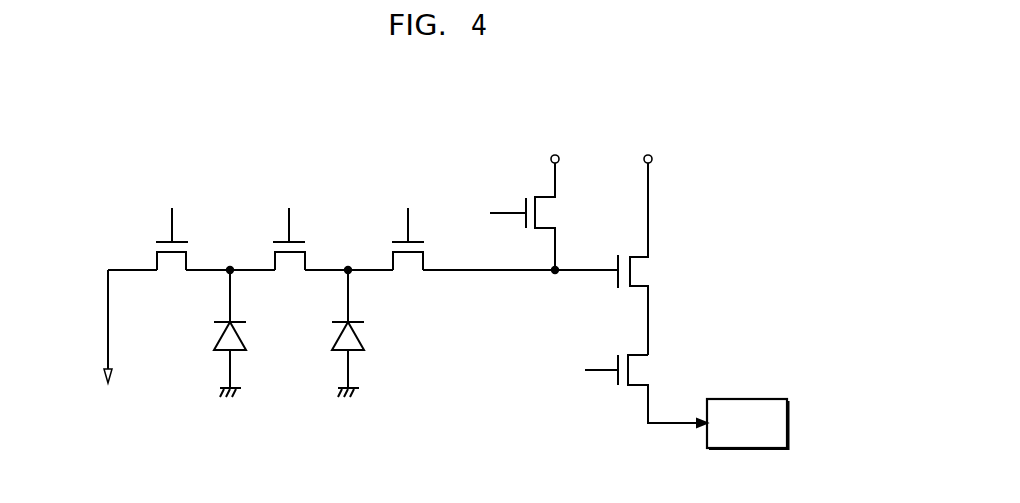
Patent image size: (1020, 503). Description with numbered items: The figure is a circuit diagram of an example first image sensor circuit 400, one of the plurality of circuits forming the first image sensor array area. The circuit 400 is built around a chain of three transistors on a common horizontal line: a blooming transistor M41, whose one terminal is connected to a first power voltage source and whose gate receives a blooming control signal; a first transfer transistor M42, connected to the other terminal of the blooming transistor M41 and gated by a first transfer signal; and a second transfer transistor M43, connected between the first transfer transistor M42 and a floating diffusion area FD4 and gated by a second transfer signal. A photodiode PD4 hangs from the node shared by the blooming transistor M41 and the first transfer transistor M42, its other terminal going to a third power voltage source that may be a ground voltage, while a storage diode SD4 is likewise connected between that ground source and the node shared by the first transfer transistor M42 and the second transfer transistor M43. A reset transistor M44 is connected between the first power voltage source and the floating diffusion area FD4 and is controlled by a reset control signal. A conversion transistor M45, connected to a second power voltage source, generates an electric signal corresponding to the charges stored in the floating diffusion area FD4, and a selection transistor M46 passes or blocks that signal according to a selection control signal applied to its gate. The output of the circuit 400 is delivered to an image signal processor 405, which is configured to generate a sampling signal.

The first image sensor circuit 400 is at (452, 275).
The image signal processor (ISP) 405 is at (748, 399).
The blooming transistor M41 is at (171, 253).
The first transfer transistor M42 is at (289, 253).
The second transfer transistor M43 is at (408, 253).
The reset transistor M44 is at (543, 212).
The conversion transistor M45 is at (653, 255).
The selection transistor M46 is at (646, 391).
The photodiode PD4 is at (252, 333).
The storage diode SD4 is at (370, 333).
The floating diffusion area FD4 is at (554, 283).